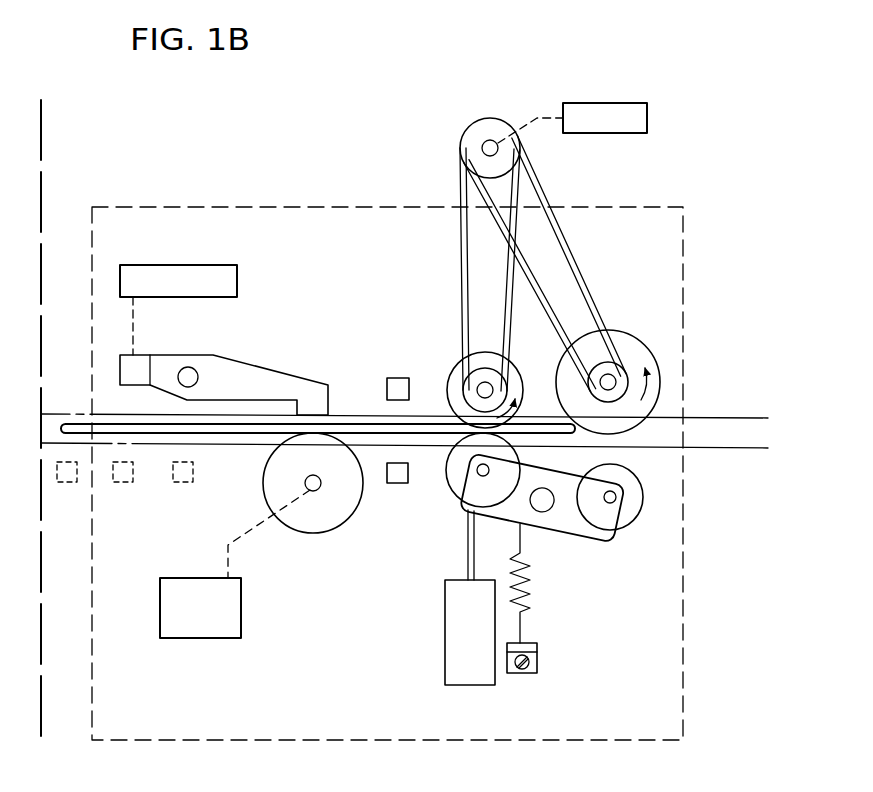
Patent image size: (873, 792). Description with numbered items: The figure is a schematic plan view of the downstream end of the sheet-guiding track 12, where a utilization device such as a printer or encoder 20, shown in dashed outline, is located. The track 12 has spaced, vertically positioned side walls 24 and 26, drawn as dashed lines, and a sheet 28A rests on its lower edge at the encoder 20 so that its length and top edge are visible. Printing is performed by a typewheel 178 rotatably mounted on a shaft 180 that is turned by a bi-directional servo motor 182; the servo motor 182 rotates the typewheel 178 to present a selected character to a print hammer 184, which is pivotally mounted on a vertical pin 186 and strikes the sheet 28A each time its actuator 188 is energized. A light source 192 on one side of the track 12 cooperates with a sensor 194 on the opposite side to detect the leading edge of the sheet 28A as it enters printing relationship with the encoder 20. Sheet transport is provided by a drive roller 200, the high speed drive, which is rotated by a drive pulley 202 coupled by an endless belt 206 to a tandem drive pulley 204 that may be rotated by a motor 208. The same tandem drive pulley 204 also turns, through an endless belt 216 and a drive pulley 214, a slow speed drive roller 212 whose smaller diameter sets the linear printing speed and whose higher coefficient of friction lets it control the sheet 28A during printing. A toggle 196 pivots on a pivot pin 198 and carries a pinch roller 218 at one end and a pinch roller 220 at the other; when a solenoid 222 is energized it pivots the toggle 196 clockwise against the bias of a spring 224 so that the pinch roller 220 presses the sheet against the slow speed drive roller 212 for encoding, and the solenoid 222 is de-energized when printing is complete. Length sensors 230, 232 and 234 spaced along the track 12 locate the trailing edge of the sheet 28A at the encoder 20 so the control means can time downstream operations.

The track 12 is at (705, 462).
The encoder 20 is at (208, 203).
The side wall 24 is at (750, 449).
The side wall 26 is at (748, 417).
The sheet 28A is at (242, 437).
The typewheel 178 is at (329, 538).
The shaft 180 is at (308, 491).
The servo motor 182 is at (213, 638).
The print hammer 184 is at (277, 372).
The vertical pin 186 is at (192, 367).
The actuator 188 is at (200, 263).
The light source 192 is at (403, 483).
The sensor 194 is at (387, 385).
The toggle 196 is at (614, 553).
The pivot pin 198 is at (545, 512).
The drive roller 200 is at (620, 336).
The drive pulley 202 is at (598, 370).
The tandem drive pulley 204 is at (485, 127).
The endless belt 206 is at (545, 188).
The motor 208 is at (597, 103).
The slow speed drive roller 212 is at (484, 354).
The drive pulley 214 is at (470, 378).
The endless belt 216 is at (458, 188).
The pinch roller 218 is at (632, 520).
The pinch roller 220 is at (456, 490).
The solenoid 222 is at (477, 672).
The spring 224 is at (525, 605).
The length sensor 230 is at (67, 482).
The length sensor 232 is at (123, 482).
The length sensor 234 is at (183, 482).